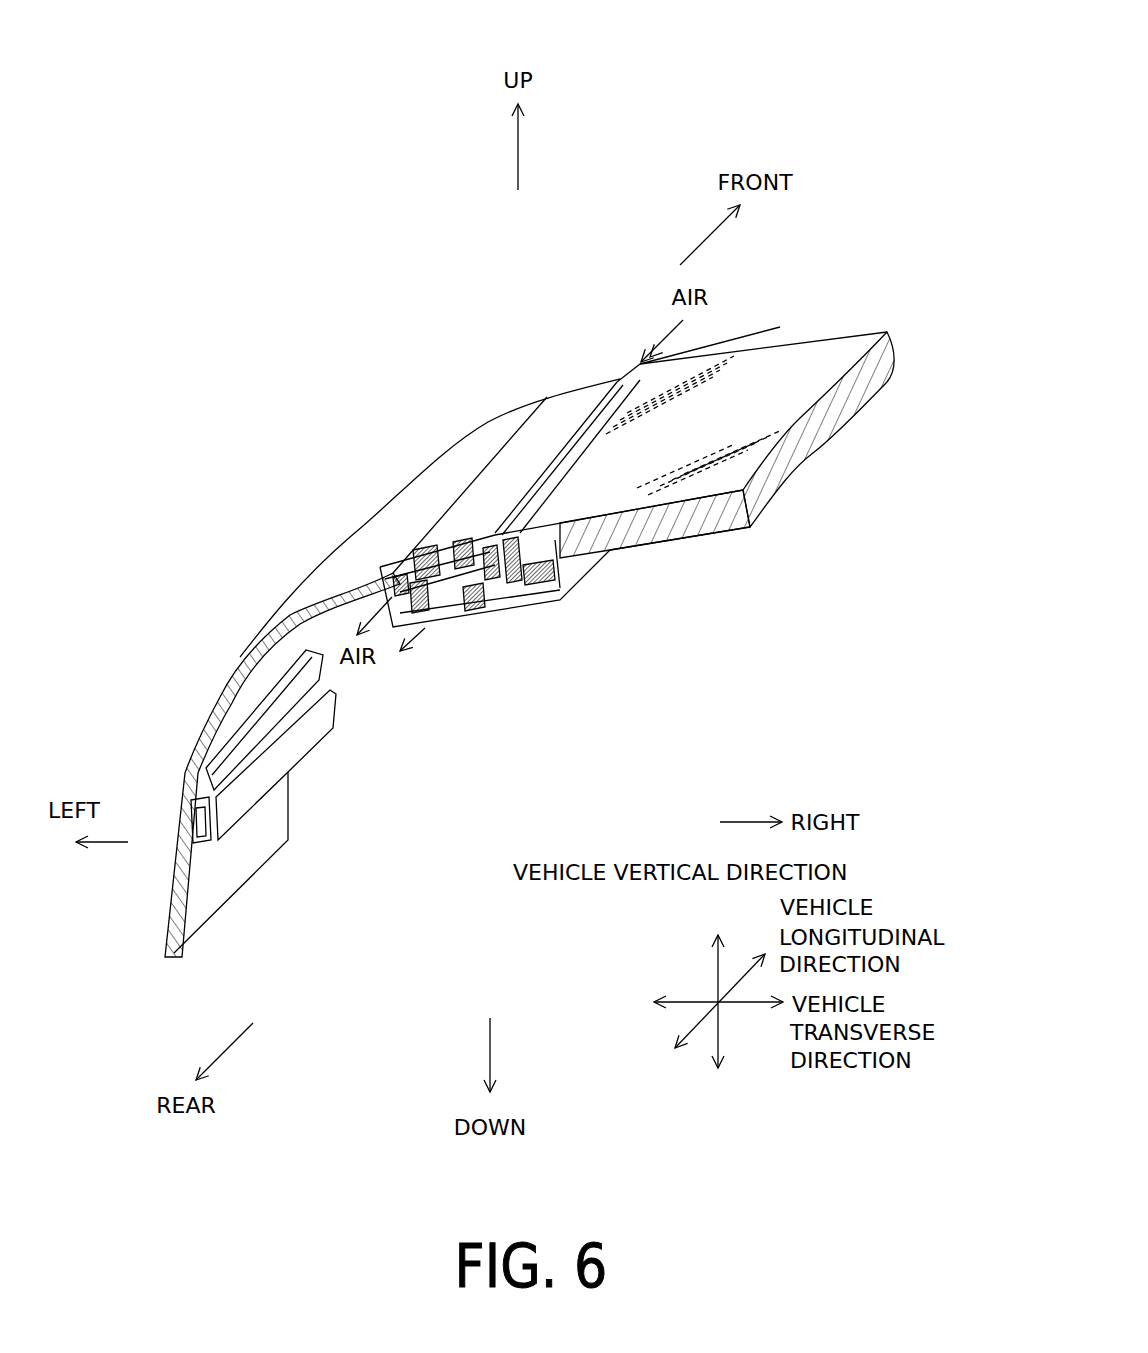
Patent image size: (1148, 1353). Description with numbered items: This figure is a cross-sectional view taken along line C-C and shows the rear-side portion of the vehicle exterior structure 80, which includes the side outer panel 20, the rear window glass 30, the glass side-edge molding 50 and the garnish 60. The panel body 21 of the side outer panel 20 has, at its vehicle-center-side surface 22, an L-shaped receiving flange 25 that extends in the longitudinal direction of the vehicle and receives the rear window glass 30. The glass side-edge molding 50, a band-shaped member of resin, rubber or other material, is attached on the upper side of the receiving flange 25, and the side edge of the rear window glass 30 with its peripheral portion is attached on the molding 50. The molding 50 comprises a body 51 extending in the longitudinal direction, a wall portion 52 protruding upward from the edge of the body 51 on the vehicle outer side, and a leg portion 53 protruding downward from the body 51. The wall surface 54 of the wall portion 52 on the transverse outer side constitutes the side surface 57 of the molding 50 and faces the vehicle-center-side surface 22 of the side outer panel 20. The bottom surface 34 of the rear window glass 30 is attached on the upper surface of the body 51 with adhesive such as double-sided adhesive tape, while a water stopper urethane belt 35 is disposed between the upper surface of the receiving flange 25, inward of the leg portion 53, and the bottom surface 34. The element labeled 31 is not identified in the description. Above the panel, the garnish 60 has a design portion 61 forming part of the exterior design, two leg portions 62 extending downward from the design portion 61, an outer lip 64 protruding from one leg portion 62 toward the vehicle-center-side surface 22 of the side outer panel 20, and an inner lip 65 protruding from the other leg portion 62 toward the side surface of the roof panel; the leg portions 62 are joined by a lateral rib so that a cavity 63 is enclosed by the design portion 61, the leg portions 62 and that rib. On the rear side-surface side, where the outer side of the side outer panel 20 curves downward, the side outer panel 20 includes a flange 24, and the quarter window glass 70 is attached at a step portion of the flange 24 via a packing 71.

The side outer panel 20 is at (328, 551).
The panel body 21 is at (460, 453).
The vehicle-center-side surface 22 is at (420, 615).
The flange 24 is at (248, 795).
The receiving flange 25 is at (430, 605).
The rear window glass 30 is at (827, 363).
The panel surface 31 is at (792, 377).
The bottom surface 34 is at (797, 477).
The water stopper urethane belt 35 is at (582, 576).
The glass side-edge molding 50 is at (664, 368).
The body 51 is at (530, 613).
The wall portion 52 is at (503, 607).
The leg portion 53 is at (540, 630).
The wall surface 54 is at (493, 613).
The side surface 57 is at (401, 585).
The garnish 60 is at (592, 378).
The design portion 61 is at (567, 410).
The leg portions 62 is at (487, 613).
The cavity 63 is at (444, 563).
The outer lip 64 is at (403, 576).
The inner lip 65 is at (481, 537).
The quarter window glass 70 is at (166, 890).
The packing 71 is at (198, 853).
The vehicle exterior structure 80 is at (298, 126).